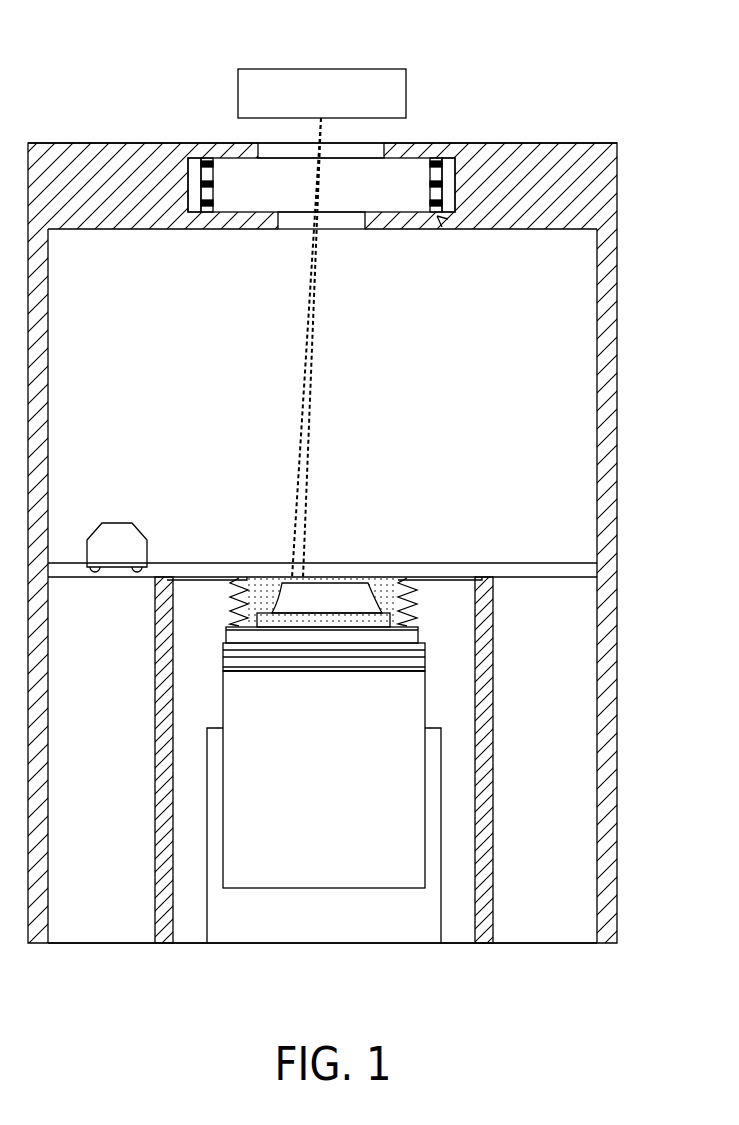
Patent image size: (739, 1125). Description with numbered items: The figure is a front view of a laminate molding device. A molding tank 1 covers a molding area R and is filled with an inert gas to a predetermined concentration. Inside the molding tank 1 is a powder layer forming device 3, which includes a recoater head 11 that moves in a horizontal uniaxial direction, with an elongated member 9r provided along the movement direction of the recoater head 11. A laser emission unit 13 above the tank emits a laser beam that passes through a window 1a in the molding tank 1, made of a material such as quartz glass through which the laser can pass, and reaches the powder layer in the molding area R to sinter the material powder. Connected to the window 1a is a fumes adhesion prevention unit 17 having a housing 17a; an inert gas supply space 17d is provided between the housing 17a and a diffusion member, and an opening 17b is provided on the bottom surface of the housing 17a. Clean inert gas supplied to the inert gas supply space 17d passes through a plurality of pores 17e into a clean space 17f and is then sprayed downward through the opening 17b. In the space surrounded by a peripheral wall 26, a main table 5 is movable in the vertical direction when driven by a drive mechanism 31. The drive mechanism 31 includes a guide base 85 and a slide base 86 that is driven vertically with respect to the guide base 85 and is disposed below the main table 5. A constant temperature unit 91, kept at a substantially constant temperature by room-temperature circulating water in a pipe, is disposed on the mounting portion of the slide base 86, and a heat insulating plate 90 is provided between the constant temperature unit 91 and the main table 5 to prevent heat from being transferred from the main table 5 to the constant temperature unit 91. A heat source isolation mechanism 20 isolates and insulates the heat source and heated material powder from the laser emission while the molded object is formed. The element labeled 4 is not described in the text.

The molding tank 1 is at (578, 124).
The window 1a is at (372, 140).
The powder layer forming device 3 is at (457, 550).
The plate support 4 is at (572, 577).
The main table 5 is at (418, 650).
The elongated member 9r is at (390, 575).
The recoater head 11 is at (117, 528).
The laser emission unit 13 is at (333, 80).
The fumes adhesion prevention unit 17 is at (437, 216).
The housing 17a is at (467, 157).
The opening 17b is at (336, 225).
The inert gas supply space 17d is at (193, 170).
The pores 17e is at (217, 187).
The clean space 17f is at (262, 200).
The heat source isolation mechanism 20 is at (428, 195).
The peripheral wall 26 is at (163, 628).
The drive mechanism 31 is at (198, 842).
The guide base 85 is at (432, 898).
The slide base 86 is at (410, 703).
The heat insulating plate 90 is at (226, 650).
The constant temperature unit 91 is at (235, 670).
The molding area R is at (277, 567).